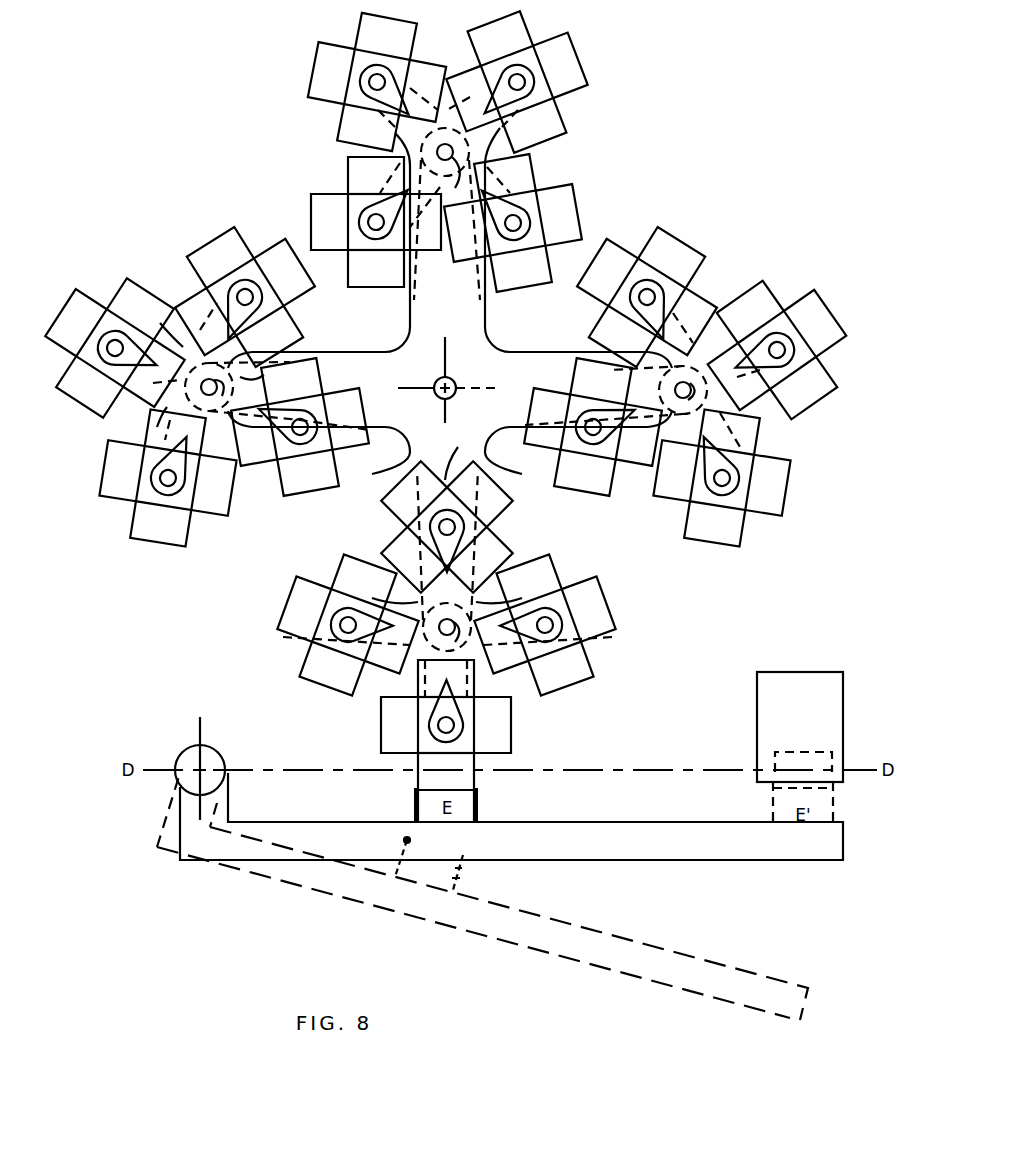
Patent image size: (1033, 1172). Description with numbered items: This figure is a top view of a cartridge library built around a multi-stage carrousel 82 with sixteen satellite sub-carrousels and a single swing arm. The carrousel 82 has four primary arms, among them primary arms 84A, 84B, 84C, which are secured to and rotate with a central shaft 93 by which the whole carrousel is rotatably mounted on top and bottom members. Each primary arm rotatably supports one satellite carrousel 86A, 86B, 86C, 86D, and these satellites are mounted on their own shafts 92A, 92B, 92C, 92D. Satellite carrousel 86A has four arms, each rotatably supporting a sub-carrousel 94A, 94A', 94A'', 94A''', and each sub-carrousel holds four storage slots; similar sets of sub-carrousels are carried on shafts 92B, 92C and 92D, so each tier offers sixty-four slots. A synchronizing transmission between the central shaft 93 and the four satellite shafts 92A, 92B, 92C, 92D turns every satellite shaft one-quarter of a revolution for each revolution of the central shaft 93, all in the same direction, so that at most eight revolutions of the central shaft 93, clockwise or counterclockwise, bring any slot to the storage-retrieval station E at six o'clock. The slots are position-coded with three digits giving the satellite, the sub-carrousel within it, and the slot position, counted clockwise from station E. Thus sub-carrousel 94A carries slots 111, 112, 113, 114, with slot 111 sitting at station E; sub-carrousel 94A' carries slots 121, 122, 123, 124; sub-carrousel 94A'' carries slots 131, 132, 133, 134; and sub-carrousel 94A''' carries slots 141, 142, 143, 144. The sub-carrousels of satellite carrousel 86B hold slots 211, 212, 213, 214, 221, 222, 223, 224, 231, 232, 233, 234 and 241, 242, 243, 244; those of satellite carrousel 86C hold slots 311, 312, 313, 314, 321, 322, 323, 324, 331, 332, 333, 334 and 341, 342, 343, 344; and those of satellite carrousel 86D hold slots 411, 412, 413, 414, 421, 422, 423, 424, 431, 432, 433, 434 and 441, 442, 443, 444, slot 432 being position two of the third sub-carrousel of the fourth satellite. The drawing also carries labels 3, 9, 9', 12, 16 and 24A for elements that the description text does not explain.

The multi-stage carrousel 82 is at (446, 395).
The satellite carrousel 86A is at (480, 612).
The satellite carrousel 86B is at (200, 379).
The satellite carrousel 86C is at (464, 150).
The satellite carrousel 86D is at (693, 380).
The primary arm 84A is at (385, 458).
The primary arm 84B is at (380, 357).
The primary arm 84C is at (458, 313).
The satellite shaft 92A is at (447, 583).
The satellite shaft 92B is at (263, 376).
The satellite shaft 92C is at (447, 214).
The satellite shaft 92D is at (616, 395).
The central shaft 93 is at (442, 376).
The sub-carrousel 94A is at (533, 716).
The sub-carrousel 94A' is at (340, 713).
The sub-carrousel 94A'' is at (468, 454).
The sub-carrousel 94A''' is at (570, 549).
The pin 3 is at (632, 256).
The hole 9 is at (469, 693).
The hole 9' is at (431, 588).
The carriage 12 is at (503, 748).
The base 16 is at (721, 868).
The guide block 24A is at (805, 684).
The cartridge storage slot 111 is at (450, 777).
The cartridge storage slot 112 is at (399, 725).
The cartridge storage slot 113 is at (446, 678).
The cartridge storage slot 114 is at (492, 725).
The cartridge storage slot 121 is at (331, 669).
The cartridge storage slot 122 is at (304, 608).
The cartridge storage slot 123 is at (363, 581).
The cartridge storage slot 124 is at (391, 640).
The cartridge storage slot 131 is at (413, 557).
The cartridge storage slot 132 is at (414, 493).
The cartridge storage slot 133 is at (479, 494).
The cartridge storage slot 134 is at (481, 559).
The cartridge storage slot 141 is at (501, 641).
The cartridge storage slot 142 is at (528, 581).
The cartridge storage slot 143 is at (587, 609).
The cartridge storage slot 144 is at (561, 670).
The cartridge storage slot 211 is at (76, 323).
The cartridge storage slot 212 is at (140, 309).
The cartridge storage slot 213 is at (154, 373).
The cartridge storage slot 214 is at (89, 387).
The cartridge storage slot 221 is at (221, 258).
The cartridge storage slot 222 is at (284, 272).
The cartridge storage slot 223 is at (269, 336).
The cartridge storage slot 224 is at (205, 320).
The cartridge storage slot 231 is at (292, 381).
The cartridge storage slot 232 is at (346, 419).
The cartridge storage slot 233 is at (308, 473).
The cartridge storage slot 234 is at (254, 435).
The cartridge storage slot 241 is at (175, 431).
The cartridge storage slot 242 is at (213, 485).
The cartridge storage slot 243 is at (160, 523).
The cartridge storage slot 244 is at (121, 470).
The cartridge storage slot 311 is at (560, 66).
The cartridge storage slot 312 is at (534, 125).
The cartridge storage slot 313 is at (471, 80).
The cartridge storage slot 314 is at (501, 38).
The cartridge storage slot 321 is at (563, 217).
The cartridge storage slot 322 is at (521, 269).
The cartridge storage slot 323 is at (472, 245).
The cartridge storage slot 324 is at (520, 173).
The cartridge storage slot 331 is at (433, 237).
The cartridge storage slot 332 is at (376, 268).
The cartridge storage slot 333 is at (329, 222).
The cartridge storage slot 334 is at (376, 175).
The cartridge storage slot 341 is at (422, 91).
The cartridge storage slot 342 is at (368, 127).
The cartridge storage slot 343 is at (331, 73).
The cartridge storage slot 344 is at (386, 36).
The cartridge storage slot 411 is at (714, 523).
The cartridge storage slot 412 is at (675, 470).
The cartridge storage slot 413 is at (729, 431).
The cartridge storage slot 414 is at (767, 485).
The cartridge storage slot 421 is at (584, 472).
The cartridge storage slot 422 is at (547, 419).
The cartridge storage slot 423 is at (601, 381).
The cartridge storage slot 424 is at (638, 438).
The cartridge storage slot 431 is at (622, 336).
The cartridge storage slot 432 is at (607, 272).
The cartridge storage slot 433 is at (671, 258).
The cartridge storage slot 434 is at (692, 306).
The cartridge storage slot 441 is at (739, 376).
The cartridge storage slot 442 is at (749, 314).
The cartridge storage slot 443 is at (815, 323).
The cartridge storage slot 444 is at (803, 388).